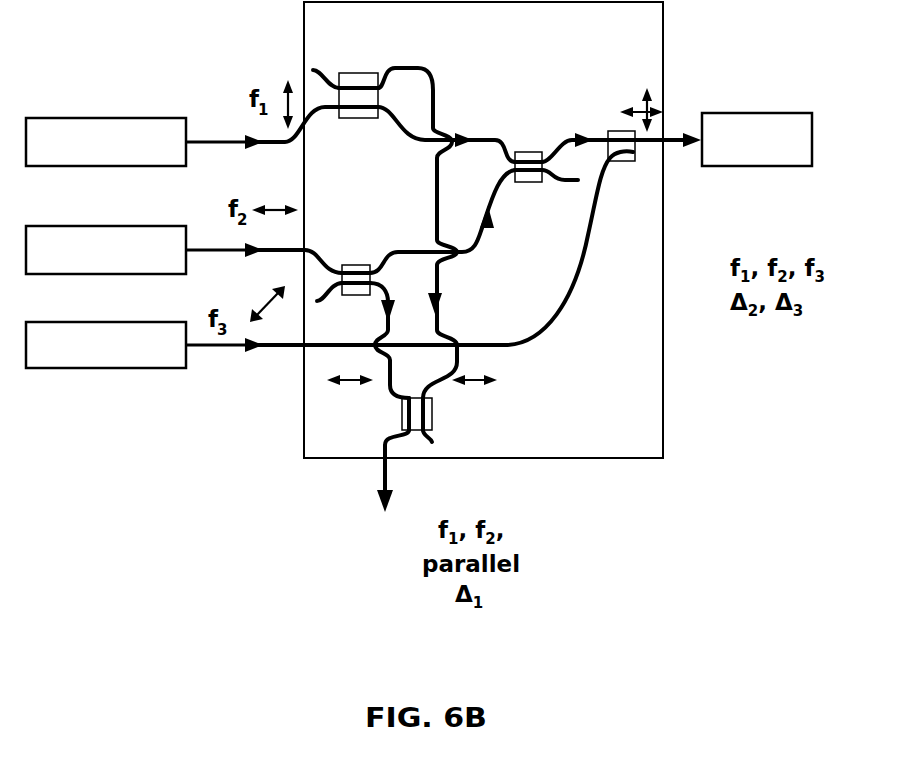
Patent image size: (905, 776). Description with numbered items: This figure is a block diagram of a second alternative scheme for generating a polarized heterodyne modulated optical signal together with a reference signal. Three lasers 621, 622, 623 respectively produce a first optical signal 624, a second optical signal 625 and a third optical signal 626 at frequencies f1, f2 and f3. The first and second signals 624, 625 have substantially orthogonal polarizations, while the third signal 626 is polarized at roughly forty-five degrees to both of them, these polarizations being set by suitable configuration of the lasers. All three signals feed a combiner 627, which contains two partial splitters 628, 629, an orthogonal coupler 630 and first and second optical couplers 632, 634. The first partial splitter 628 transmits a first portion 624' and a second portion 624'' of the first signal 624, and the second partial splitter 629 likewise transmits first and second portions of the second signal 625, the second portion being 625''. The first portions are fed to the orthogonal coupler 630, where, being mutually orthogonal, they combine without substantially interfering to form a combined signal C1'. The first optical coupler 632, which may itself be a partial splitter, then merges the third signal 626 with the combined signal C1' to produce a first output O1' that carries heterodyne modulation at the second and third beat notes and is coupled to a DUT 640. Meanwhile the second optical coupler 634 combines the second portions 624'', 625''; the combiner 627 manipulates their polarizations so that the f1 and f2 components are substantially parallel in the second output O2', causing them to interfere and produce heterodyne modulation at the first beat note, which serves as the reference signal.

The laser 621 is at (158, 118).
The laser 622 is at (137, 226).
The laser 623 is at (137, 368).
The first optical signal 624 is at (261, 90).
The second optical signal 625 is at (243, 230).
The third optical signal 626 is at (244, 350).
The combiner 627 is at (300, 462).
The partial splitter 628 is at (353, 73).
The partial splitter 629 is at (354, 265).
The orthogonal coupler 630 is at (528, 152).
The first optical coupler 632 is at (620, 162).
The second optical coupler 634 is at (430, 402).
The DUT 640 is at (753, 113).
The first portion of the first signal 624' is at (459, 106).
The second portion of the first signal 624'' is at (460, 233).
The second portion of the second signal 625'' is at (359, 340).
The combined signal C1' is at (622, 98).
The first output O1' is at (720, 198).
The second output O2' is at (425, 471).